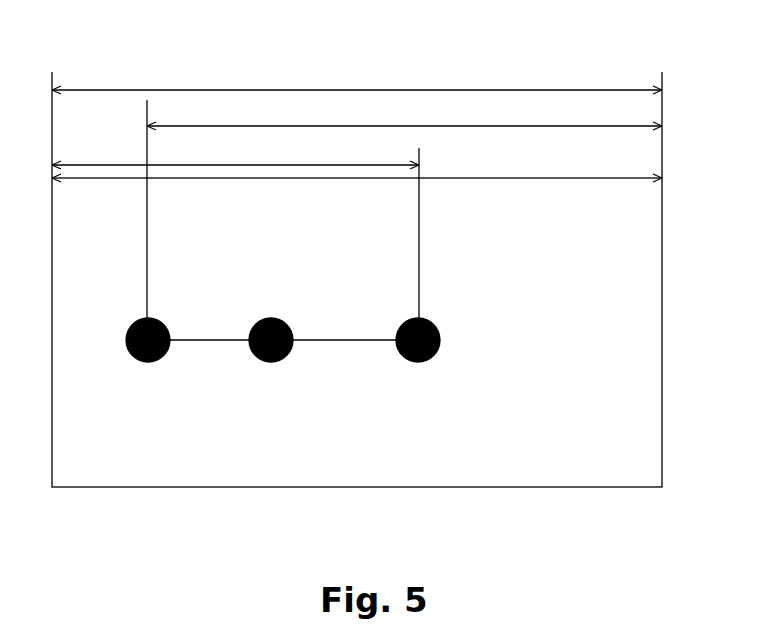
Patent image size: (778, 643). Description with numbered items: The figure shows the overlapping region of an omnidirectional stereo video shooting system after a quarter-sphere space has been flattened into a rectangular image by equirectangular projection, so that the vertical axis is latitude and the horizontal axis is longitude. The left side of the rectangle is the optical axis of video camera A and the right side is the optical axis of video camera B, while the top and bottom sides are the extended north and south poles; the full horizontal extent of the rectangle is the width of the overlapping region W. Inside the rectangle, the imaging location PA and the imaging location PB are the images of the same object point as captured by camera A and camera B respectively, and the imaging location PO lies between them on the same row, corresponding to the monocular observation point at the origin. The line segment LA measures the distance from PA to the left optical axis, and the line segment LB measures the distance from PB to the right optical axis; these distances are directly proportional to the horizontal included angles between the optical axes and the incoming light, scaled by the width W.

The width of the overlapping region W is at (357, 66).
The line segment LB is at (404, 109).
The line segment LA is at (235, 148).
The imaging location PB is at (148, 260).
The imaging location for monocular observation point PO is at (290, 369).
The imaging location PA is at (421, 284).